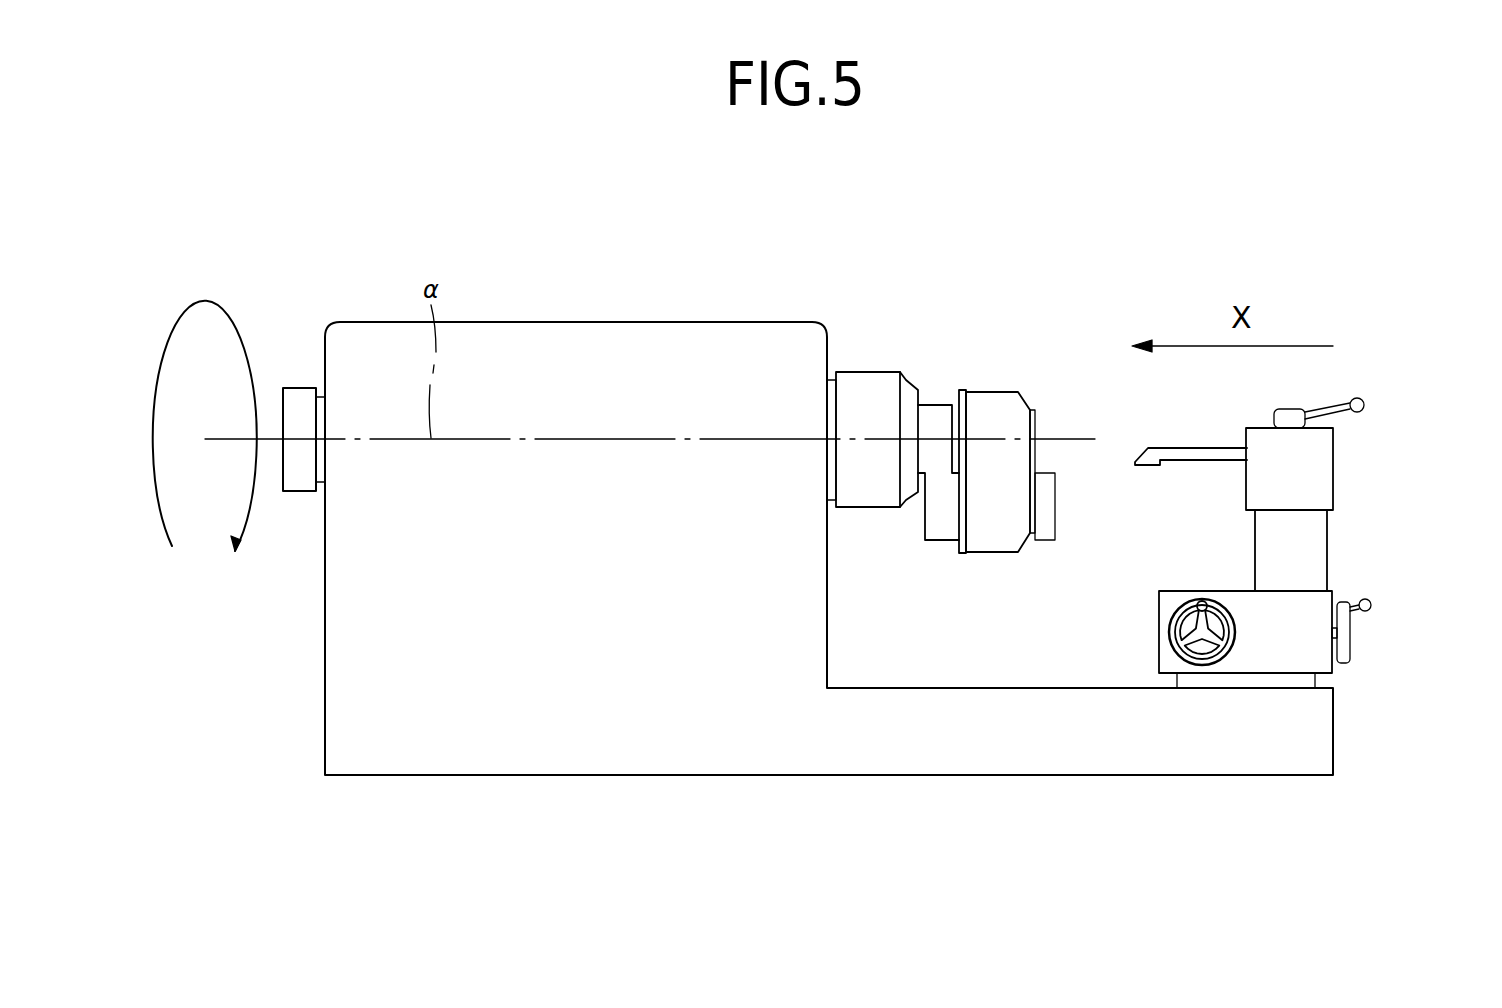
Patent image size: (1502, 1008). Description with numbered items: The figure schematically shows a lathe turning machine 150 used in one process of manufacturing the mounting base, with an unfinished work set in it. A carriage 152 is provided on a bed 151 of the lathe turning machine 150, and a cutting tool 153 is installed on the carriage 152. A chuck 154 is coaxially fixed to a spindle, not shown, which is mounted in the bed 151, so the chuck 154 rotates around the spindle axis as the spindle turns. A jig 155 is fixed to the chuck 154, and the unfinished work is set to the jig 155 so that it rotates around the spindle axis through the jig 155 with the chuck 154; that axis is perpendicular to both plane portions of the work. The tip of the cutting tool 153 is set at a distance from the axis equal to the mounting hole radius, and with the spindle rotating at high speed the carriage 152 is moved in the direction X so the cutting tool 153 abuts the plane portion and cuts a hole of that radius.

The lathe turning machine 150 is at (820, 615).
The bed 151 is at (770, 760).
The carriage 152 is at (1347, 538).
The cutting tool 153 is at (1150, 467).
The chuck 154 is at (862, 372).
The jig 155 is at (933, 405).